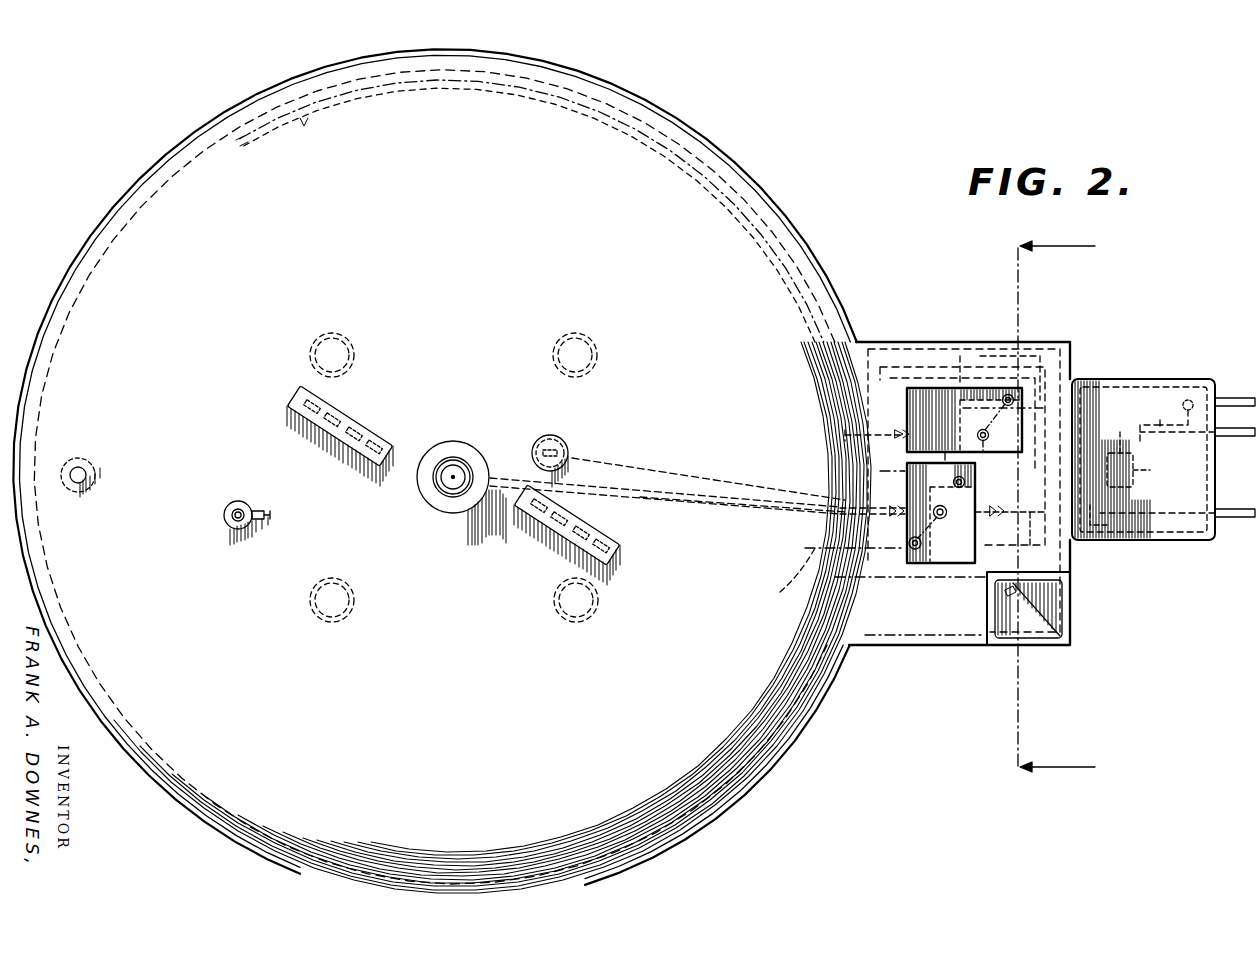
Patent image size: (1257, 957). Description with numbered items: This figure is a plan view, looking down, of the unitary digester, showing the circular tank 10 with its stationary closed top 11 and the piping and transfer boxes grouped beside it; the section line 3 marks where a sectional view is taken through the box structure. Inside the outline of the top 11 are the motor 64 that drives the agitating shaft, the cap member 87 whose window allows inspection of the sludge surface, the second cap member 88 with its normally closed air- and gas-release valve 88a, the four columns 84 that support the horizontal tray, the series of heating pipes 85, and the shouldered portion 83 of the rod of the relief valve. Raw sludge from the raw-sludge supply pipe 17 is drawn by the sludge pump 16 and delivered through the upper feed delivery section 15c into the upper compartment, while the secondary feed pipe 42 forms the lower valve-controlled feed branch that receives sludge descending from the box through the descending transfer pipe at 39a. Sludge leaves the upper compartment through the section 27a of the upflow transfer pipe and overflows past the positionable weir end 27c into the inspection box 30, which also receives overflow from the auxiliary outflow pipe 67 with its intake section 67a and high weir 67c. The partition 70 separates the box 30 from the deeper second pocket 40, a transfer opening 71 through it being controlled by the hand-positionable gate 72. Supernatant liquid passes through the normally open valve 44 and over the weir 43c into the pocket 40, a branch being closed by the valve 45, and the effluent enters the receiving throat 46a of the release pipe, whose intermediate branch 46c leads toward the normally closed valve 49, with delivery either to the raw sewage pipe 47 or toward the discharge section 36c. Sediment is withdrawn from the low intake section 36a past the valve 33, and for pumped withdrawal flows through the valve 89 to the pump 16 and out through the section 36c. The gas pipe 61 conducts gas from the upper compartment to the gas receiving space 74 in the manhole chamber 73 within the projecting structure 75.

The tank 10 is at (779, 184).
The stationary closed top 11 is at (434, 477).
The upper feed delivery section 15c is at (487, 99).
The secondary feed pipe 42 is at (626, 138).
The projecting structure 75 is at (900, 647).
The valve 45 is at (970, 388).
The second inspection or transfer pocket 40 is at (905, 410).
The transfer opening 71 is at (933, 450).
The receiving throat 46a is at (1011, 396).
The overflow weir 43c is at (986, 441).
The valve 44 is at (880, 432).
The partition 70 is at (880, 471).
The valve 33 is at (882, 497).
The inspection box or transfer pocket 30 is at (927, 565).
The valve or gate 72 is at (985, 511).
The valve 39a is at (965, 485).
The upper weir end 27c is at (942, 519).
The high overflow weir section 67c is at (914, 551).
The manhole or access chamber 73 is at (1000, 638).
The gas receiving space 74 is at (1045, 637).
The intermediate branch 46c is at (1131, 398).
The valve 49 is at (1187, 399).
The raw sewage pipe 47 is at (1235, 389).
The raw-sludge supply pipe 17 is at (1238, 436).
The sludge pump 16 is at (1136, 471).
The discharge section 36c is at (1182, 513).
The valve 89 is at (1102, 520).
The section line 3 is at (1067, 511).
The motor 64 is at (441, 494).
The gas outflow pipe 61 is at (636, 478).
The heating pipes 85 is at (299, 408).
The cap member 87 is at (556, 438).
The shouldered portion 83 is at (81, 472).
The second cap member 88 is at (231, 506).
The valve 88a is at (259, 510).
The columns 84 is at (580, 636).
The auxiliary outflow pipe 67 is at (800, 562).
The intake section 67a is at (814, 552).
The section 27a is at (742, 521).
The low intake section 36a is at (720, 530).